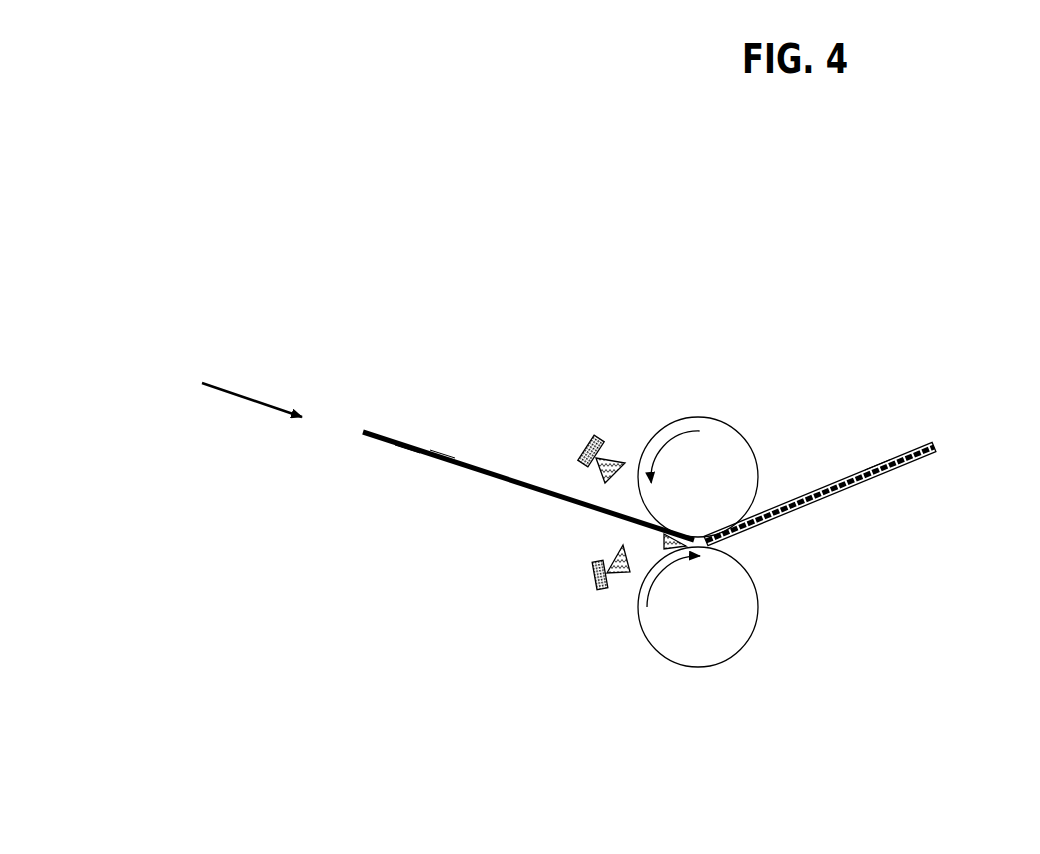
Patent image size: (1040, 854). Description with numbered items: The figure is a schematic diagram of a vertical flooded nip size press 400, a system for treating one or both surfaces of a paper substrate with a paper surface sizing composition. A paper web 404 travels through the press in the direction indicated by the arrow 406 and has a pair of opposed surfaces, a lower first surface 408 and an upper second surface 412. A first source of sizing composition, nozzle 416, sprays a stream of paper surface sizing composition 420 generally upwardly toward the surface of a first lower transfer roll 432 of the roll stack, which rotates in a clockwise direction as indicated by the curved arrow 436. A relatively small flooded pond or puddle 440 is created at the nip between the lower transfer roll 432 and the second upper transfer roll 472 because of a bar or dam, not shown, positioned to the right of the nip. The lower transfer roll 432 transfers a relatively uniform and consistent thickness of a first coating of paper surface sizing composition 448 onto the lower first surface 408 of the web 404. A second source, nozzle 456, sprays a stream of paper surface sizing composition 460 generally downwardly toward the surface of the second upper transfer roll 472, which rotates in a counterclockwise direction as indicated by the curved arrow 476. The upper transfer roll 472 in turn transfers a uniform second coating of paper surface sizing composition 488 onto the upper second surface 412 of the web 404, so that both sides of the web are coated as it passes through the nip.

The vertical flooded nip size press 400 is at (890, 253).
The paper web 404 is at (418, 375).
The machine direction 406 is at (252, 399).
The first surface 408 is at (407, 449).
The second surface 412 is at (442, 451).
The nozzle 416 is at (598, 578).
The stream of paper surface sizing composition 420 is at (620, 572).
The first lower transfer roll 432 is at (735, 667).
The curved arrow 436 is at (660, 575).
The flooded pond 440 is at (653, 542).
The first coating of paper surface sizing composition 448 is at (918, 460).
The nozzle 456 is at (587, 443).
The stream of paper surface sizing composition 460 is at (613, 460).
The second upper transfer roll 472 is at (745, 410).
The curved arrow 476 is at (657, 459).
The second coating of paper surface sizing composition 488 is at (877, 462).